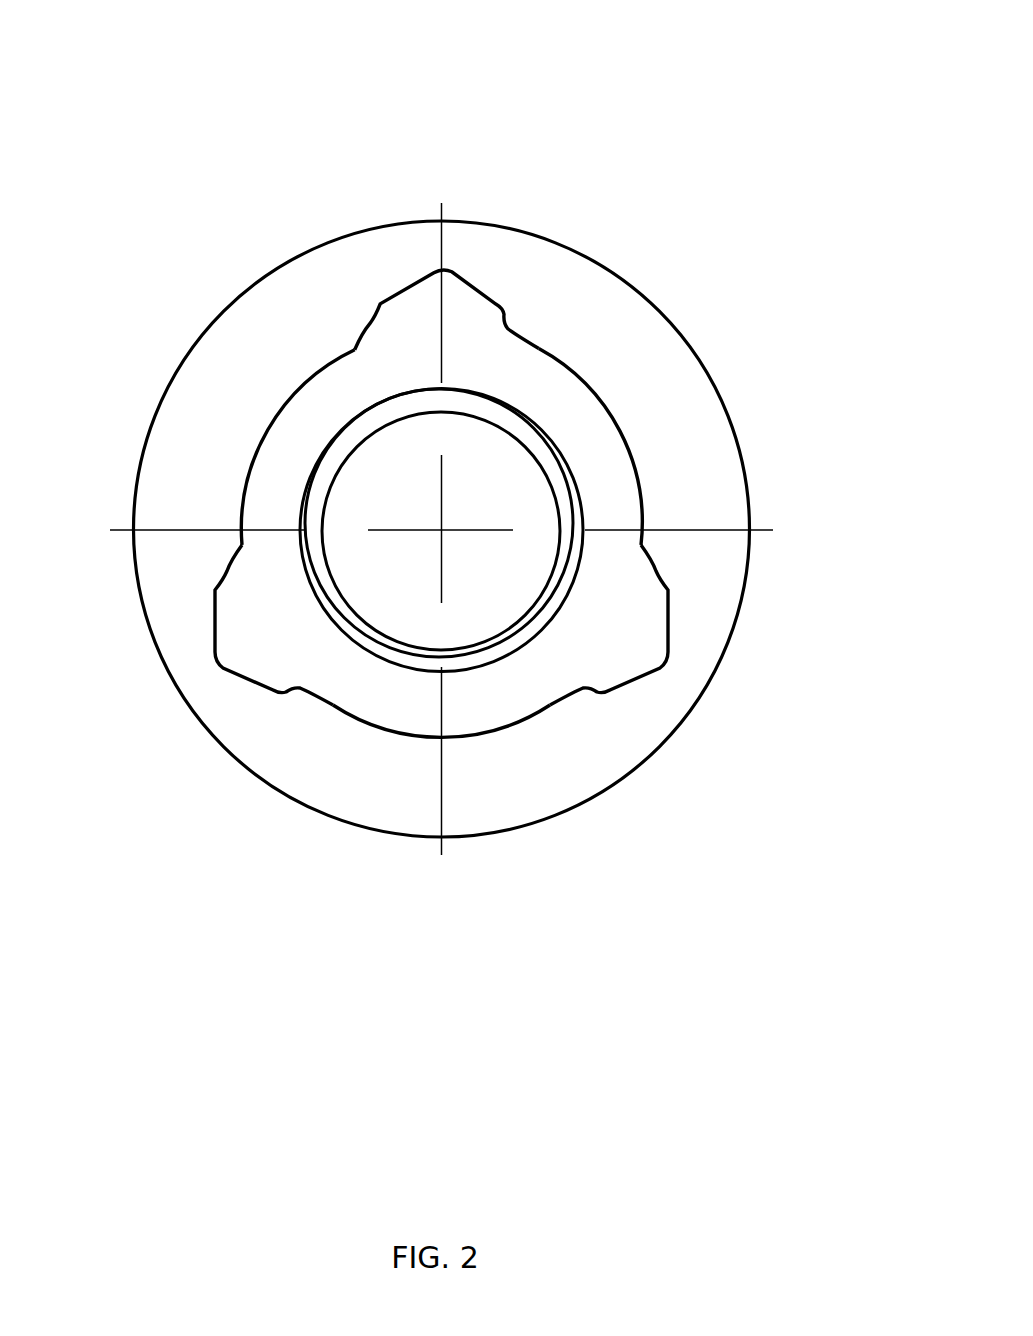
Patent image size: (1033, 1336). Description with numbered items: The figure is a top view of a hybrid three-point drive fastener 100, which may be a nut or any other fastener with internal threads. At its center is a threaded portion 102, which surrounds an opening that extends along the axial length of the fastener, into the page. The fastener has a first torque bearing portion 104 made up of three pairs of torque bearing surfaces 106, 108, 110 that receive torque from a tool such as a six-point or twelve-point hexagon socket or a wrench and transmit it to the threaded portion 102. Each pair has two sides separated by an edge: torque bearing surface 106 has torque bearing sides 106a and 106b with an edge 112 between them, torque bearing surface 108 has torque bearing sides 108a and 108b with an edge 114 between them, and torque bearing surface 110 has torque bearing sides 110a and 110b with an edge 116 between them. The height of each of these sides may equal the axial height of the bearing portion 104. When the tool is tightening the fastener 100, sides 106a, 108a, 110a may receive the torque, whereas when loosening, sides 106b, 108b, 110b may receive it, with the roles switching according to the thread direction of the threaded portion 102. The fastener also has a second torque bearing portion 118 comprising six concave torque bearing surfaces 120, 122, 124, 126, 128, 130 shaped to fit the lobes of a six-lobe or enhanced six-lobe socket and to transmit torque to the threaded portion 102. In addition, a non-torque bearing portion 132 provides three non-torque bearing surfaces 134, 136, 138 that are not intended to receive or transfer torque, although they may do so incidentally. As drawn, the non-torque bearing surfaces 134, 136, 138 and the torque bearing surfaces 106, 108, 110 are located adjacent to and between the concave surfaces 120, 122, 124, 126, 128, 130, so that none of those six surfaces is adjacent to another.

The fastener 100 is at (93, 72).
The threaded portion 102 is at (612, 480).
The first torque bearing portion 104 is at (400, 305).
The torque bearing surface 106 is at (405, 283).
The torque bearing side 106a is at (403, 279).
The torque bearing side 106b is at (488, 275).
The torque bearing surface 108 is at (642, 686).
The torque bearing side 108a is at (676, 612).
The torque bearing side 108b is at (636, 683).
The torque bearing surface 110 is at (232, 683).
The torque bearing side 110a is at (240, 685).
The torque bearing side 110b is at (200, 607).
The edge 112 is at (444, 262).
The edge 114 is at (672, 663).
The edge 116 is at (203, 641).
The second torque bearing portion 118 is at (371, 322).
The torque bearing surface 120 is at (361, 333).
The torque bearing surface 122 is at (517, 320).
The torque bearing surface 124 is at (657, 568).
The torque bearing surface 126 is at (580, 698).
The torque bearing surface 128 is at (293, 700).
The torque bearing surface 130 is at (215, 565).
The non-torque bearing portion 132 is at (413, 636).
The non-torque bearing surface 134 is at (586, 380).
The non-torque bearing surface 136 is at (514, 718).
The non-torque bearing surface 138 is at (252, 440).